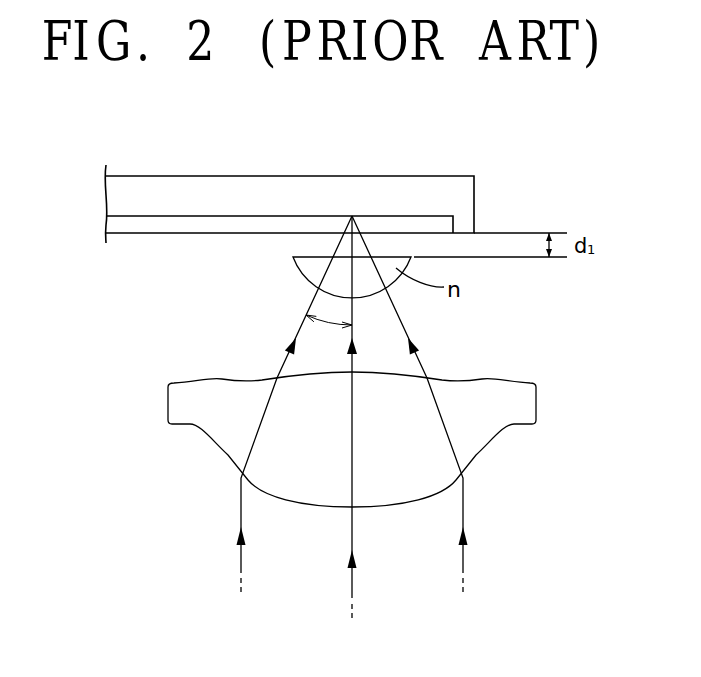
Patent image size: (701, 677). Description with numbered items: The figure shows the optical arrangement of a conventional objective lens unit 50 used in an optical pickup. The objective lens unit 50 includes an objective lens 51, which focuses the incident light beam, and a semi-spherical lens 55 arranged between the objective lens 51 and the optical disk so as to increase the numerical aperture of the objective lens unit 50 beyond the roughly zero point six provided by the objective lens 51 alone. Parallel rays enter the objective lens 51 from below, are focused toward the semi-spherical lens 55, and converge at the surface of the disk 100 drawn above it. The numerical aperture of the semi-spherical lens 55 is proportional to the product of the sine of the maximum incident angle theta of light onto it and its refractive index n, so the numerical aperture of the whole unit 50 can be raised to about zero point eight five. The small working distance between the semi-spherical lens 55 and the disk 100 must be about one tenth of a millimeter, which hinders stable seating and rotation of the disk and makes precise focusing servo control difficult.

The optical disk / substrate 100 is at (494, 187).
The objective lens unit 50 is at (113, 332).
The objective lens 51 is at (167, 401).
The semi-spherical lens 55 is at (293, 262).